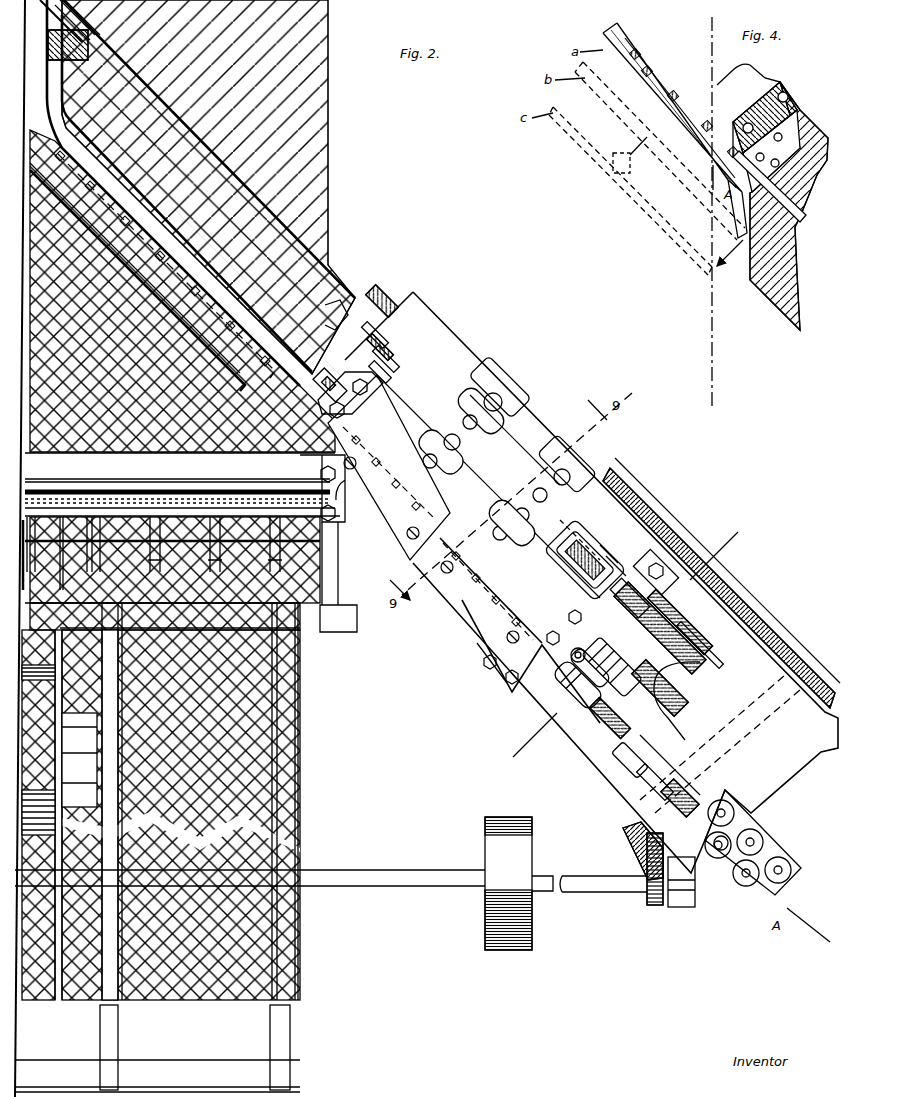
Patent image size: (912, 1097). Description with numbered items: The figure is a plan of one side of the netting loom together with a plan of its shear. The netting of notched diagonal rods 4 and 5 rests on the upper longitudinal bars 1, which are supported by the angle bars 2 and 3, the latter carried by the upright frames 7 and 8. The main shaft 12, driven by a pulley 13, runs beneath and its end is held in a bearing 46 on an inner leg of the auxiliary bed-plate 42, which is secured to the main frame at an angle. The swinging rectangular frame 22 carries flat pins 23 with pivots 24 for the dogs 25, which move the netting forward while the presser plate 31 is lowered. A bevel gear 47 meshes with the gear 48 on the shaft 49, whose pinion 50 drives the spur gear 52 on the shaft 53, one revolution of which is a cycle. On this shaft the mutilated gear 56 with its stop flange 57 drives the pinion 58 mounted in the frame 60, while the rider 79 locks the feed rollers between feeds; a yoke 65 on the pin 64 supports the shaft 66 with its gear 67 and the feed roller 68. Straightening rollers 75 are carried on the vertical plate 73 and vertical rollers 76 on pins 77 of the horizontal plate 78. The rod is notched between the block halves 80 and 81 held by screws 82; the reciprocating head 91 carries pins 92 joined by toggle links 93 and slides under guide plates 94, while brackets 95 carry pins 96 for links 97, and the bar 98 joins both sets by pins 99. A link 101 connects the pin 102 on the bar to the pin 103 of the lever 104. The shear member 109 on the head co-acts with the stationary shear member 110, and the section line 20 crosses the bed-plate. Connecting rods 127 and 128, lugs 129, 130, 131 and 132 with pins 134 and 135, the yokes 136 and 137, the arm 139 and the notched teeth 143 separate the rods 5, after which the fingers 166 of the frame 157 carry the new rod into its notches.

In FIG. 2, the upper longitudinal bars 1 is at (118, 1030).
In FIG. 2, the angle bar 2 is at (157, 1076).
In FIG. 2, the angle bar 3 is at (332, 632).
In FIG. 2, the notched diagonal rods 4 is at (312, 740).
In FIG. 2, the notched diagonal rods 5 is at (312, 795).
In FIG. 2, the upright frame 7 is at (270, 1028).
In FIG. 2, the upright frame 8 is at (330, 578).
In FIG. 2, the main shaft 12 is at (384, 882).
In FIG. 2, the pulley 13 is at (487, 862).
In FIG. 2, the section line 20— 20 is at (621, 636).
In FIG. 2, the swinging rectangular frame 22 is at (182, 540).
In FIG. 2, the flat pins 23 is at (212, 540).
In FIG. 2, the pivot 24 is at (321, 488).
In FIG. 2, the dog 25 is at (278, 540).
In FIG. 2, the presser plate 31 is at (182, 485).
In FIG. 2, the auxiliary bed-plate 42 is at (591, 582).
In FIG. 2, the bearing 46 is at (690, 905).
In FIG. 2, the bevel gear 47 is at (652, 905).
In FIG. 2, the bevel gear 48 is at (627, 836).
In FIG. 2, the shaft 49 is at (740, 757).
In FIG. 2, the pinion 50 is at (803, 678).
In FIG. 2, the spur gear 52 is at (735, 601).
In FIG. 2, the shaft 53 is at (540, 744).
In FIG. 2, the mutilated gear 56 is at (714, 660).
In FIG. 2, the stop flange 57 is at (692, 646).
In FIG. 2, the pinion 58 is at (690, 632).
In FIG. 2, the frame 60 is at (662, 718).
In FIG. 2, the pin 64 is at (690, 690).
In FIG. 2, the yoke 65 is at (640, 655).
In FIG. 2, the shaft 66 is at (610, 650).
In FIG. 2, the gear 67 is at (622, 652).
In FIG. 2, the feed roller 68 is at (562, 680).
In FIG. 2, the vertical plate 73 is at (682, 766).
In FIG. 2, the horizontal straightening rollers 75 is at (620, 760).
In FIG. 2, the vertical rollers 76 is at (780, 850).
In FIG. 2, the pins 77 is at (650, 785).
In FIG. 2, the horizontal plate 78 is at (742, 813).
In FIG. 2, the rider 79 is at (672, 612).
In FIG. 2, the block half 80 is at (520, 630).
In FIG. 4, the block half 81 is at (785, 262).
In FIG. 2, the screws 82 is at (447, 570).
In FIG. 2, the reciprocating head 91 is at (389, 467).
In FIG. 2, the pins 92 is at (423, 465).
In FIG. 2, the toggle links 93 is at (428, 447).
In FIG. 2, the guide plates 94 is at (356, 405).
In FIG. 2, the brackets 95 is at (514, 388).
In FIG. 2, the pins 96 is at (507, 434).
In FIG. 2, the links 97 is at (484, 404).
In FIG. 2, the longitudinally movable bar 98 is at (507, 501).
In FIG. 2, the pins 99 is at (453, 434).
In FIG. 2, the link 101 is at (585, 560).
In FIG. 2, the pin 102 is at (580, 518).
In FIG. 2, the pin 103 is at (612, 543).
In FIG. 2, the lever 104 is at (602, 532).
In FIG. 2, the shear member 109 is at (348, 421).
In FIG. 4, the shear member 109 is at (766, 137).
In FIG. 4, the stationary shear member 110 is at (757, 206).
In FIG. 2, the connecting rod 127 is at (318, 384).
In FIG. 2, the connecting rod 128 is at (390, 294).
In FIG. 2, the lug 129 is at (394, 355).
In FIG. 2, the lug 130 is at (345, 312).
In FIG. 2, the lug 131 is at (80, 38).
In FIG. 2, the lug 132 is at (52, 2).
In FIG. 2, the pin 134 is at (386, 376).
In FIG. 2, the pin 135 is at (84, 60).
In FIG. 2, the yoke 136 is at (386, 346).
In FIG. 4, the yoke 136 is at (668, 90).
In FIG. 2, the yoke 137 is at (176, 234).
In FIG. 2, the arm 139 is at (384, 333).
In FIG. 4, the notched teeth 143 is at (648, 64).
In FIG. 2, the rectangular frame 157 is at (193, 300).
In FIG. 2, the fingers 166 is at (124, 212).